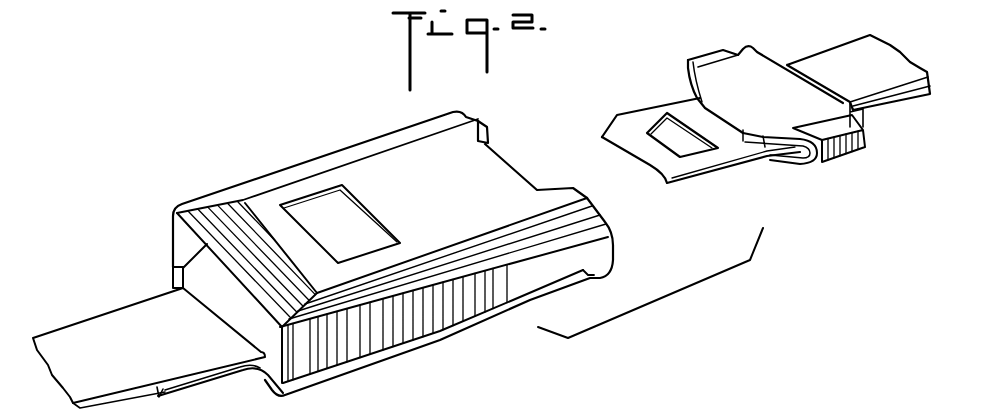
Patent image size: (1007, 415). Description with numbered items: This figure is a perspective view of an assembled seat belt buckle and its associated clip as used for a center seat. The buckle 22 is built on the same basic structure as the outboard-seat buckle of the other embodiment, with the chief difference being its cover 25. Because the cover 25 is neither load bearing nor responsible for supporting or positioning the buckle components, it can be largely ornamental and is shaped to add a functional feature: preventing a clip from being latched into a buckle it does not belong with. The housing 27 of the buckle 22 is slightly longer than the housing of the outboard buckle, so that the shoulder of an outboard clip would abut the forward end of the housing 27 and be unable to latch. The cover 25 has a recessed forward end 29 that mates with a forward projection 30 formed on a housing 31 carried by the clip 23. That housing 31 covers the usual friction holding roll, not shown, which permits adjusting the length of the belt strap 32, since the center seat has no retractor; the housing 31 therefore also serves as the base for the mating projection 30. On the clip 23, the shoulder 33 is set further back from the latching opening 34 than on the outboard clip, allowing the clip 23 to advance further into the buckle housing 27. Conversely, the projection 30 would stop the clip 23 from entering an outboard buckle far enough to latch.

The buckle 22 is at (290, 150).
The clip 23 is at (736, 184).
The cover 25 is at (395, 157).
The housing 27 is at (470, 300).
The recessed forward end 29 is at (503, 153).
The forward projection 30 is at (698, 99).
The housing 31 is at (762, 67).
The belt strap 32 is at (845, 55).
The shoulder 33 is at (795, 165).
The latching opening 34 is at (668, 147).